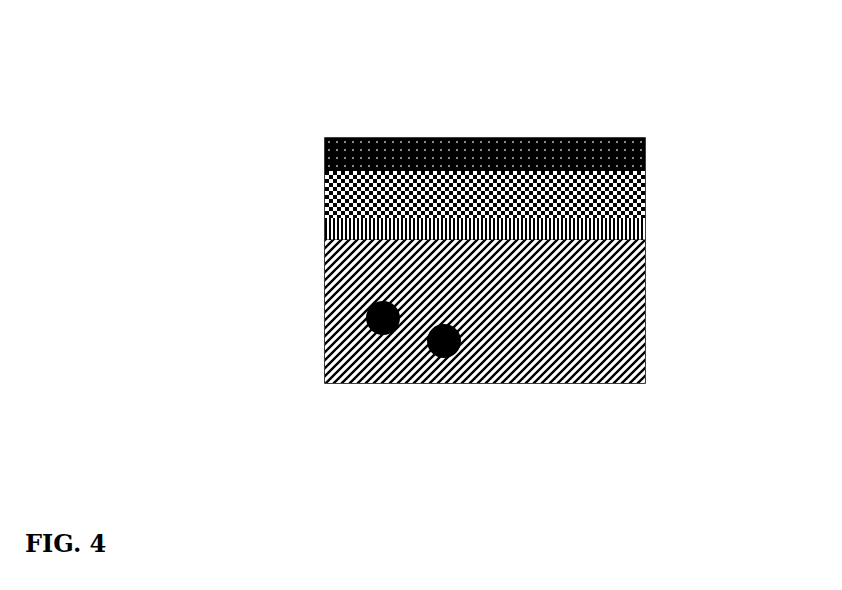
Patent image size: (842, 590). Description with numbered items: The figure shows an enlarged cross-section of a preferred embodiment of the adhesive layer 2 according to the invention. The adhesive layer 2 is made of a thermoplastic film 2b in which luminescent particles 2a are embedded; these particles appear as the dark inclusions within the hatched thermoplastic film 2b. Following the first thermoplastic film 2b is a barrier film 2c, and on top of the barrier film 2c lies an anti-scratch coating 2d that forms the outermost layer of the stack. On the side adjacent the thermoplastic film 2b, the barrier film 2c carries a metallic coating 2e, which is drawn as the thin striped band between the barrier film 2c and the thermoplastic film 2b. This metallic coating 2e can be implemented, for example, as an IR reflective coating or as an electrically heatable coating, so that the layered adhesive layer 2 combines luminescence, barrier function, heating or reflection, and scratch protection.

The adhesive layer 2 is at (235, 82).
The luminescent particles 2a is at (422, 341).
The thermoplastic film 2b is at (652, 328).
The barrier film 2c is at (323, 187).
The anti-scratch coating 2d is at (320, 153).
The metallic coating 2e is at (648, 233).